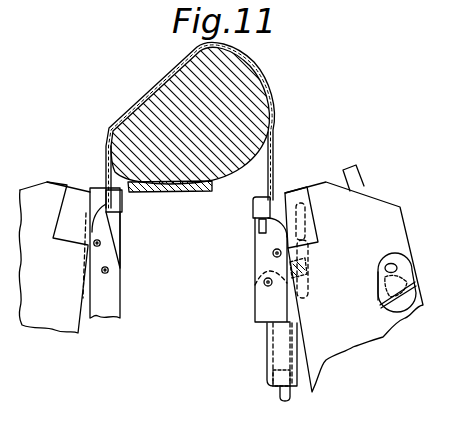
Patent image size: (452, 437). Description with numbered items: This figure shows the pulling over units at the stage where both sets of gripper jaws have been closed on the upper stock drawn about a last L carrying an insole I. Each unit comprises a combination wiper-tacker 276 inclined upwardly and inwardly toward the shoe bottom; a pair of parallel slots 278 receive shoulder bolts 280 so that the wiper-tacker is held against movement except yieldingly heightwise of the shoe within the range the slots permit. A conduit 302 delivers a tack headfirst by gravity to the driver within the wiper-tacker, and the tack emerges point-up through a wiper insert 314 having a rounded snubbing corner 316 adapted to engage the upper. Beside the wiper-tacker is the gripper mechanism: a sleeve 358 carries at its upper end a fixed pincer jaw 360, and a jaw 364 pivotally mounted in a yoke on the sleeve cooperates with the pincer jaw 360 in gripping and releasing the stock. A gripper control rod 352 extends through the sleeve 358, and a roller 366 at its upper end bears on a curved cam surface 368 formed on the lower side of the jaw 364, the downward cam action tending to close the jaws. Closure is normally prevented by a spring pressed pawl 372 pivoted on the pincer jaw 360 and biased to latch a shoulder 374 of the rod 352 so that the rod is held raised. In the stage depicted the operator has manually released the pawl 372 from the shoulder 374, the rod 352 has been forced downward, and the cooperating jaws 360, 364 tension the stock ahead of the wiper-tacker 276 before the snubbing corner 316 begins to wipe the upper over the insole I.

The last L is at (226, 178).
The insole I is at (178, 200).
The combination wiper-tacker 276 is at (58, 324).
The parallel slots 278 is at (385, 270).
The shoulder bolts 280 is at (393, 305).
The conduit 302 is at (358, 176).
The wiper insert 314 is at (72, 192).
The rounded snubbing corner 316 is at (90, 188).
The gripper control rod 352 is at (280, 394).
The sleeve 358 is at (267, 348).
The pincer jaw 360 is at (105, 195).
The jaw 364 is at (118, 232).
The roller 366 is at (260, 291).
The curved cam surface 368 is at (303, 287).
The spring pressed pawl 372 is at (306, 214).
The shoulder 374 is at (300, 308).